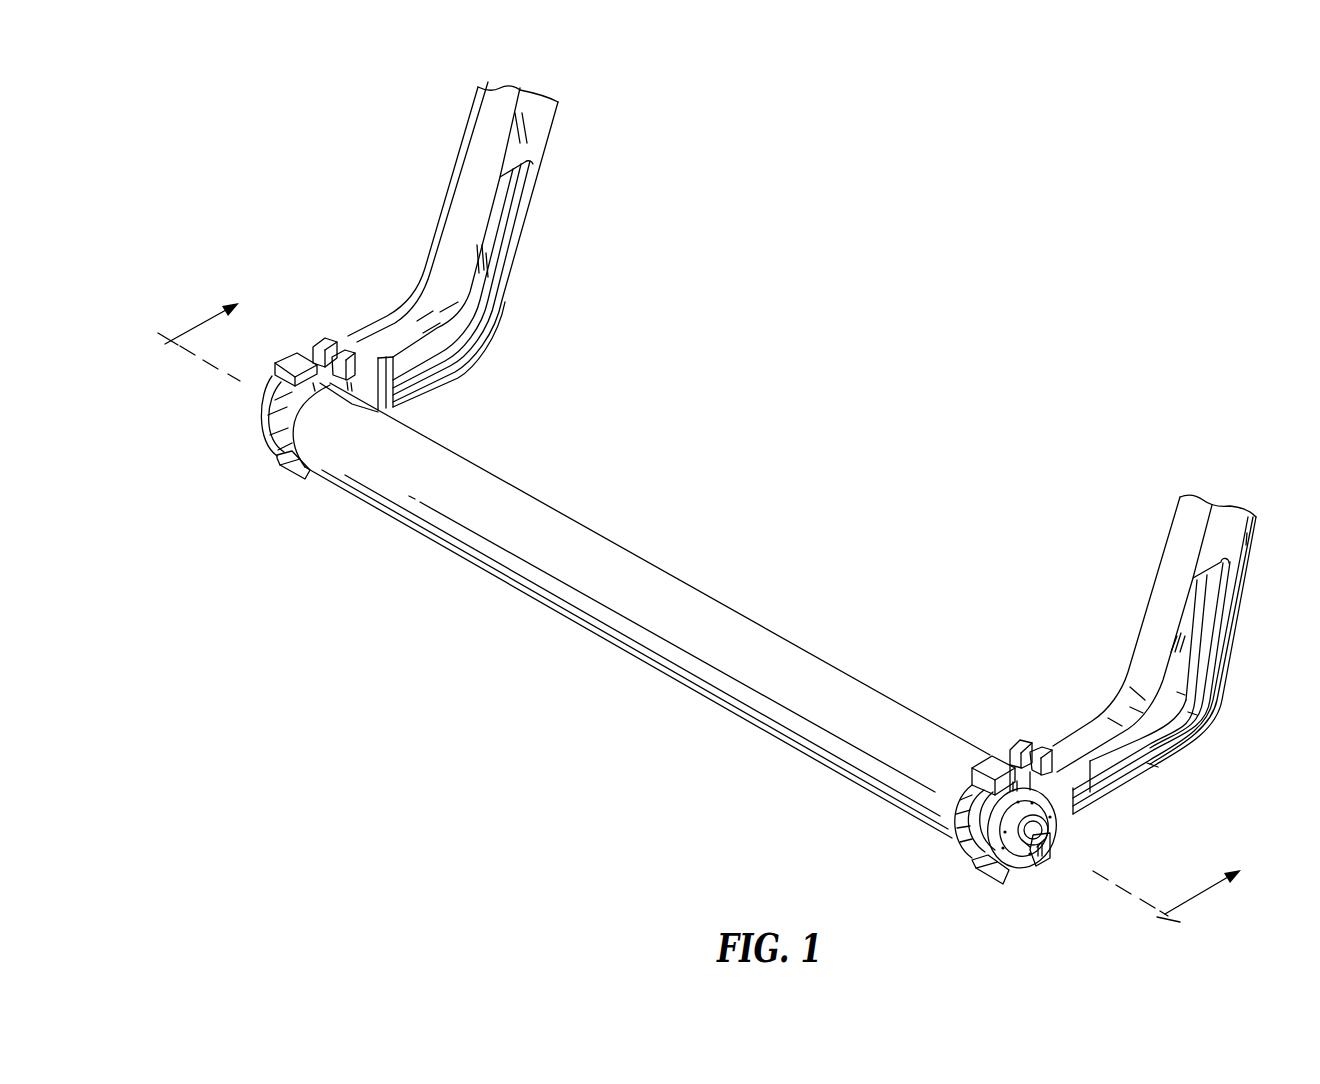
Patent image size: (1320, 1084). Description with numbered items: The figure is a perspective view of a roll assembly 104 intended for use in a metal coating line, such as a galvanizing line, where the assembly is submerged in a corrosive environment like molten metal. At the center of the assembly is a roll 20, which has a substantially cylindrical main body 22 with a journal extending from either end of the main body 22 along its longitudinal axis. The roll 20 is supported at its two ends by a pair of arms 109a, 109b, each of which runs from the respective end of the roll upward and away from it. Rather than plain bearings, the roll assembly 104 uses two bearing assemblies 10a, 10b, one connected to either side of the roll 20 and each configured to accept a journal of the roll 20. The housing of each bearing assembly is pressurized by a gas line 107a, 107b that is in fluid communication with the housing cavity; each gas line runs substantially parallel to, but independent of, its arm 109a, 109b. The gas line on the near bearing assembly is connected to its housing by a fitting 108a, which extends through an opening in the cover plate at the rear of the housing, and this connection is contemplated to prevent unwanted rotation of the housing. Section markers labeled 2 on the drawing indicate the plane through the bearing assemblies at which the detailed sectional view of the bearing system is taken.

The roll assembly 104 is at (214, 141).
The section line 2- 2 is at (708, 602).
The roll 20 is at (640, 660).
The main body 22 is at (765, 622).
The bearing assembly 10a is at (942, 890).
The bearing assembly 10b is at (277, 494).
The gas line 107a is at (1050, 822).
The gas line 107b is at (432, 246).
The fitting 108a is at (1012, 838).
The arm 109a is at (1167, 542).
The arm 109b is at (547, 146).